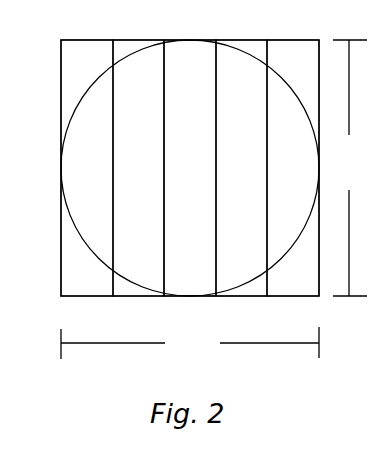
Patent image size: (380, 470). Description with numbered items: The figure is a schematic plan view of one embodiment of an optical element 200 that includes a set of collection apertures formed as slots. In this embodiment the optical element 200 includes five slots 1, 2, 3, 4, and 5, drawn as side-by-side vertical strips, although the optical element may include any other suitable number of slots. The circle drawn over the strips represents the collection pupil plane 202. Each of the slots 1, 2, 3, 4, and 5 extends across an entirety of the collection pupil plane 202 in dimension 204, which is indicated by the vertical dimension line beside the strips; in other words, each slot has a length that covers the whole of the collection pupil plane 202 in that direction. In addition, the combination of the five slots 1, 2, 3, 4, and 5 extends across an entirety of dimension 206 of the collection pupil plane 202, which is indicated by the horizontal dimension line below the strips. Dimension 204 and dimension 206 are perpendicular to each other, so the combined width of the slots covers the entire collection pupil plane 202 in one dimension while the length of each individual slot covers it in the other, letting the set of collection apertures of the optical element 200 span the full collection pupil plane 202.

The optical element 200 is at (74, 18).
The collection pupil plane 202 is at (61, 286).
The dimension 204 is at (350, 168).
The dimension 206 is at (190, 343).
The slot 1 is at (82, 176).
The slot 2 is at (133, 176).
The slot 3 is at (185, 176).
The slot 4 is at (236, 176).
The slot 5 is at (288, 176).